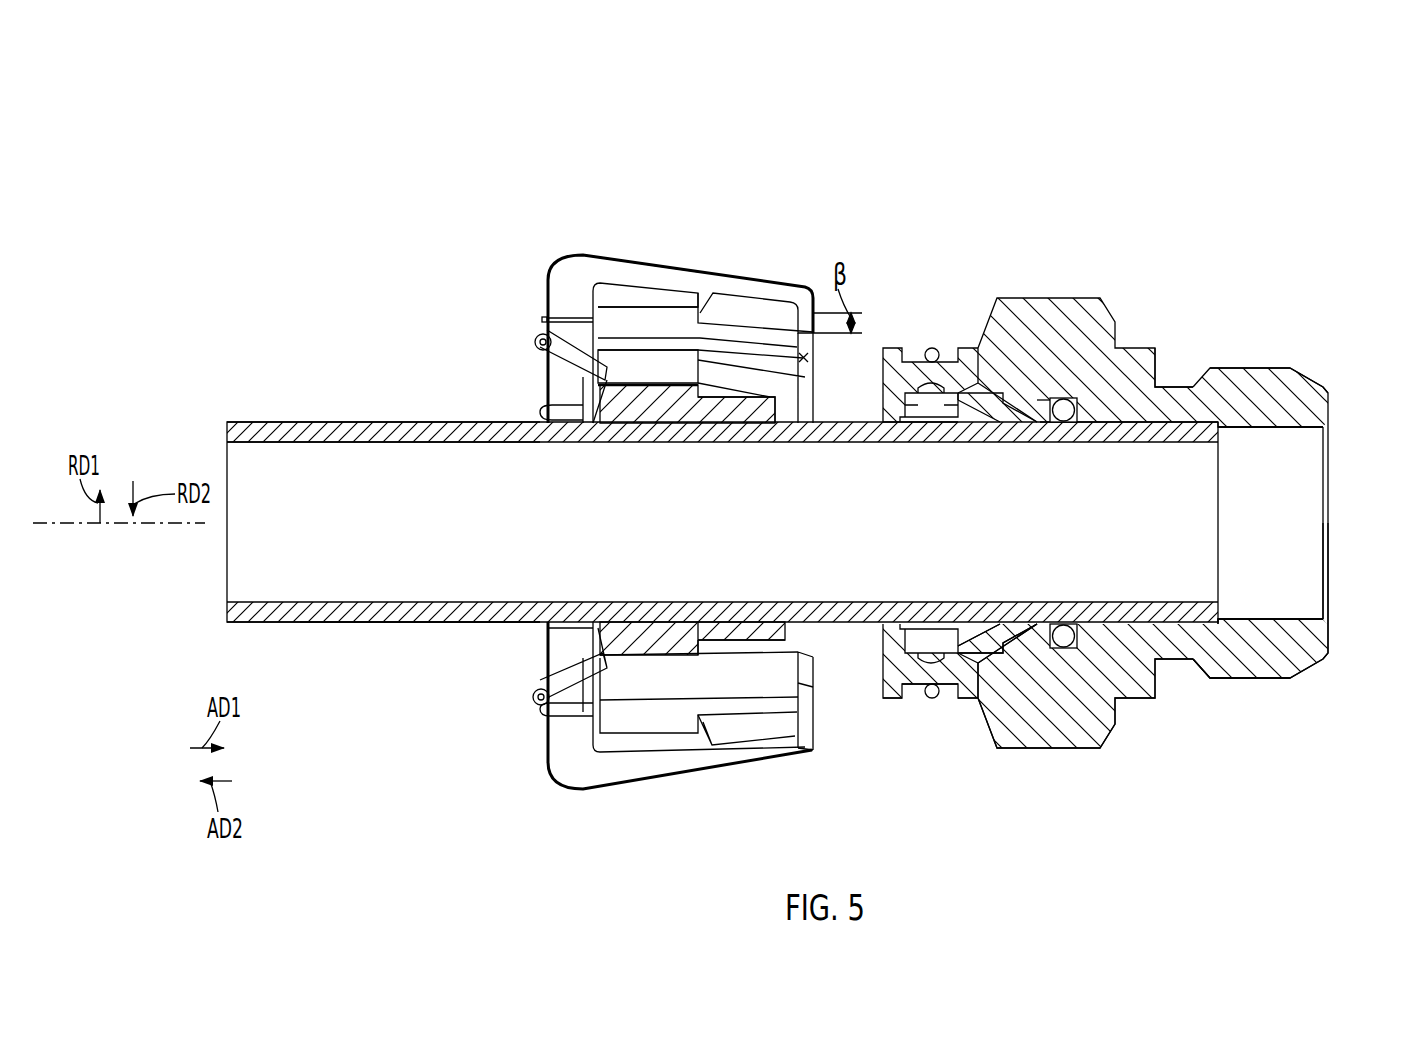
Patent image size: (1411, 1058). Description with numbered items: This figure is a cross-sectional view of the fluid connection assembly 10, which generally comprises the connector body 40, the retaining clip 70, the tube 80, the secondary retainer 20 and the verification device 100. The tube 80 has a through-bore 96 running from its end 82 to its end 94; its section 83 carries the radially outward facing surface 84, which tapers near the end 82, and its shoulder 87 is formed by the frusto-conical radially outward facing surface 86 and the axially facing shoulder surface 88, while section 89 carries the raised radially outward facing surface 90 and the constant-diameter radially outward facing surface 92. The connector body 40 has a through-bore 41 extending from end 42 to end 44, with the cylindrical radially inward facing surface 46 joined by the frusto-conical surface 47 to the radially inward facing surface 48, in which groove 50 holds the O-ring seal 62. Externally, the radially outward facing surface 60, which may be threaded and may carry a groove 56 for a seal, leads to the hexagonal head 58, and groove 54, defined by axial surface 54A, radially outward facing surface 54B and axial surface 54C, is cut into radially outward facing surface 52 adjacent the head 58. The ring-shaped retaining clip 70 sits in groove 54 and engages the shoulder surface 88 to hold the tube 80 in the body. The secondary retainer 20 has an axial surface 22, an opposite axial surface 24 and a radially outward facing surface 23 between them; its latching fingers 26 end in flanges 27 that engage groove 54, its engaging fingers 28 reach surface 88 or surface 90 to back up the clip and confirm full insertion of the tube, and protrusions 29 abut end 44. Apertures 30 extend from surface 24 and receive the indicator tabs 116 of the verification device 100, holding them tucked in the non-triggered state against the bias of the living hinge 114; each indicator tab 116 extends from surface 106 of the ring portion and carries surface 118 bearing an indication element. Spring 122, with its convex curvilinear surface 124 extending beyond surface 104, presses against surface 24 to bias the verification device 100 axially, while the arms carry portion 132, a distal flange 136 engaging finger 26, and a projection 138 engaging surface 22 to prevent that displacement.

The fluid connection assembly 10 is at (440, 145).
The secondary retainer 20 is at (658, 747).
The surface 22 is at (686, 722).
The radially outward facing surface 23 is at (663, 292).
The surface 24 is at (550, 742).
The latching finger 26 is at (762, 705).
The flange 27 is at (808, 358).
The engaging finger 28 is at (712, 408).
The protrusion 29 is at (756, 405).
The aperture 30 is at (634, 350).
The connector body 40 is at (1283, 378).
The through-bore 41 is at (1306, 519).
The end 42 is at (1330, 398).
The end 44 is at (880, 400).
The radially inward facing surface 46 is at (961, 395).
The surface 47 is at (1040, 684).
The radially inward facing surface 48 is at (1265, 636).
The groove 50 is at (1047, 398).
The radially outward facing surface 52 is at (958, 674).
The groove 54 is at (933, 704).
The axial surface 54A is at (890, 702).
The radially outward facing surface 54B is at (912, 700).
The axial surface 54C is at (952, 664).
The groove 56 is at (1181, 355).
The head 58 is at (1086, 300).
The radially outward facing surface 60 is at (1260, 368).
The seal 62 is at (1060, 398).
The retaining clip 70 is at (930, 347).
The tube 80 is at (258, 422).
The end 82 is at (1222, 466).
The section 83 is at (1180, 645).
The radially outward facing surface 84 is at (1147, 445).
The radially outward facing surface 86 is at (1018, 421).
The shoulder 87 is at (980, 410).
The shoulder surface 88 is at (966, 402).
The section 89 is at (370, 655).
The radially outward facing surface 90 is at (933, 421).
The radially outward facing surface 92 is at (314, 424).
The end 94 is at (225, 614).
The through-bore 96 is at (226, 470).
The verification device 100 is at (565, 272).
The surface 104 is at (556, 634).
The surface 106 is at (531, 672).
The living hinge 114 is at (535, 345).
The indicator tab 116 is at (535, 353).
The surface 118 is at (566, 400).
The spring 122 is at (540, 338).
The curvilinear surface 124 is at (557, 418).
The portion 132 is at (556, 282).
The flange 136 is at (806, 718).
The projection 138 is at (706, 735).